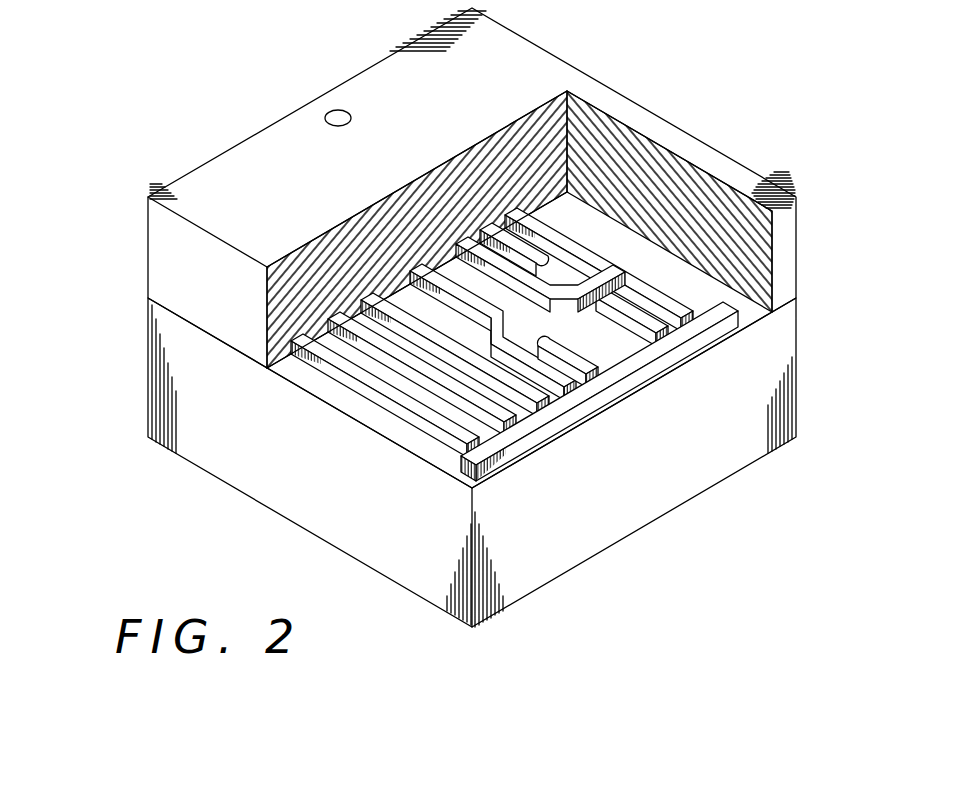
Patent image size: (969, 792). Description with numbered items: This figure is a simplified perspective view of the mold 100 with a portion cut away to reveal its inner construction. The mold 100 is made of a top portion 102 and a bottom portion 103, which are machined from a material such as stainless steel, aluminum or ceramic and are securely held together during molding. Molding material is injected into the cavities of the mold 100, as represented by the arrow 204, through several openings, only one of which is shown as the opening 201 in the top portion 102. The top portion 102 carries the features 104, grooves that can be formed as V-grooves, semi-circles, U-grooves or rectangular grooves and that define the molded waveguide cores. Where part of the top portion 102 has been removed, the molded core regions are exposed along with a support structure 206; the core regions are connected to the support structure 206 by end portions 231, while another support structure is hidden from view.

The mold 100 is at (494, 317).
The top portion 102 is at (603, 84).
The bottom portion 103 is at (747, 458).
The features 104 is at (303, 327).
The opening 201 is at (351, 122).
The arrow 204 is at (367, 75).
The support structure 206 is at (453, 461).
The end portions 231 is at (408, 425).